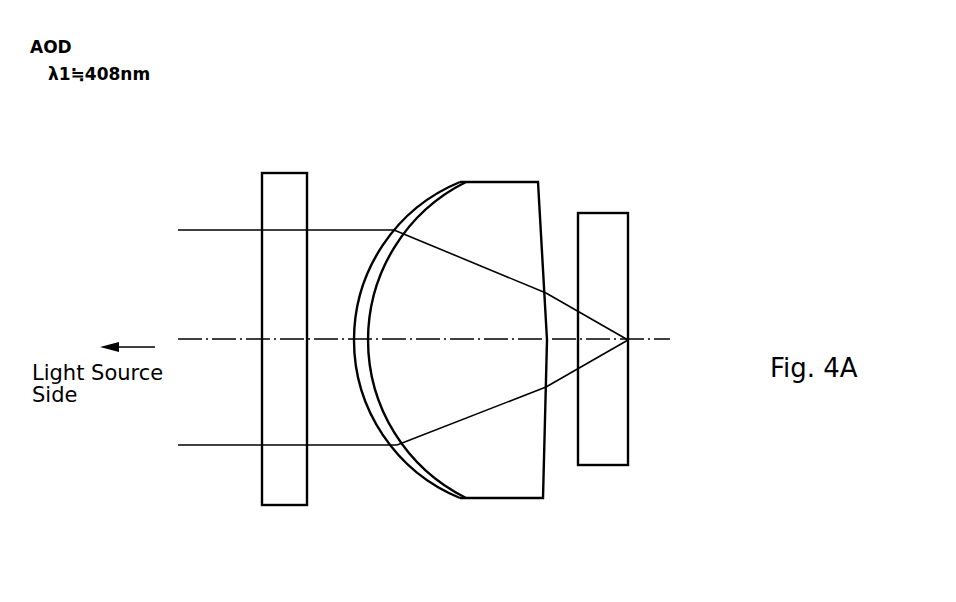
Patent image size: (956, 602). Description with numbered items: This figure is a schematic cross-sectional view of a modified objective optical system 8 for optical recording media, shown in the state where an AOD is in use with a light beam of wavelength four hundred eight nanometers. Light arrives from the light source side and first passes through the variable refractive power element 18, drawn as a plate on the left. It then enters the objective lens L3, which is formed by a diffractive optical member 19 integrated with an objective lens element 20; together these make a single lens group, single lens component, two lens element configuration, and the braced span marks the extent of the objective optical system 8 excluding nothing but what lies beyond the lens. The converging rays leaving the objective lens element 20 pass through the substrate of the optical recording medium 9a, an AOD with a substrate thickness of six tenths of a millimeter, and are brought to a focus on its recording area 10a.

The objective optical system 8 is at (665, 85).
The variable refractive power element 18 is at (293, 173).
The diffractive optical member 19 is at (457, 182).
The objective lens element 20 is at (503, 190).
The objective lens L3 is at (527, 124).
The optical recording medium 9a is at (630, 183).
The recording area 10a is at (630, 253).